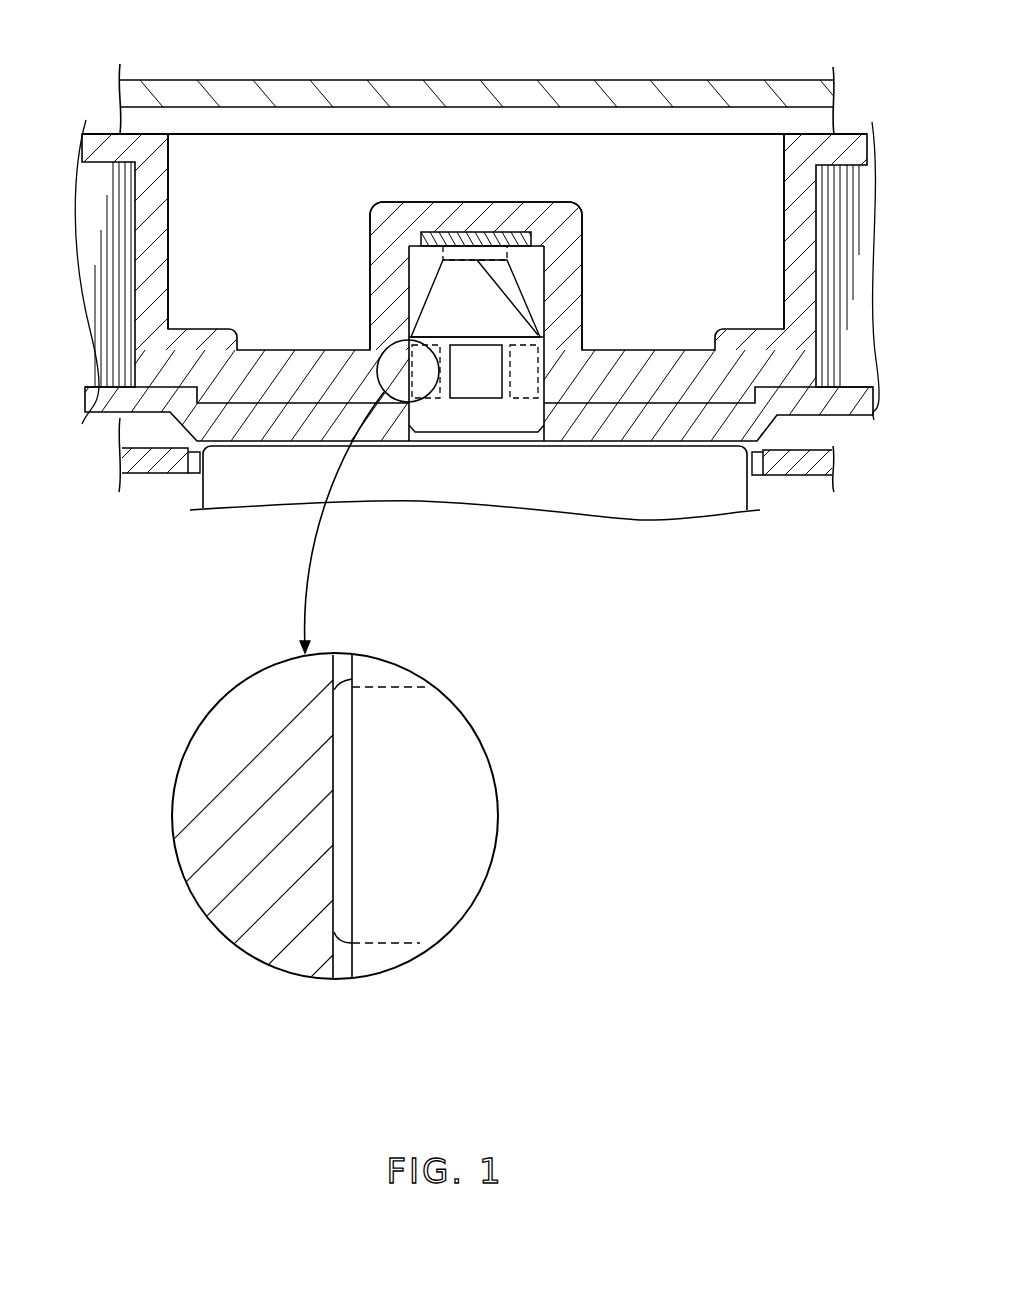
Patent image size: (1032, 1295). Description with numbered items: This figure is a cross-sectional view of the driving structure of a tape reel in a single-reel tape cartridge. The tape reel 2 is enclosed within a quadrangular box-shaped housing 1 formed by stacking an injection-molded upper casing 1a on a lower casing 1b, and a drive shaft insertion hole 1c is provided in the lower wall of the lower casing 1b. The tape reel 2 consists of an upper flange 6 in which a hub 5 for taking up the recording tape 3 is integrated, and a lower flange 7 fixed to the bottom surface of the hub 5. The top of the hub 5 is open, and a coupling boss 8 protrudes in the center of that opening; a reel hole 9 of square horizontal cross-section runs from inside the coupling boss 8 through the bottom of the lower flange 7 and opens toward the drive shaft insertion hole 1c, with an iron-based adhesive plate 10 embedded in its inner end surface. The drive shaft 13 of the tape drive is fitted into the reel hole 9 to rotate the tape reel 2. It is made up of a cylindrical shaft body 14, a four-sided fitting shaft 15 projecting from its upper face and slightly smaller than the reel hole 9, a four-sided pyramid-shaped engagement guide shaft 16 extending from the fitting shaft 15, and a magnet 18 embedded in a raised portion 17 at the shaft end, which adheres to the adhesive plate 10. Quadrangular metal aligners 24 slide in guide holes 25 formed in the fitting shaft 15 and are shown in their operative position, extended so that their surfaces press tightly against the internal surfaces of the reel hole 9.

The housing 1 is at (295, 78).
The upper casing 1a is at (223, 90).
The lower casing 1b is at (135, 476).
The drive shaft insertion hole 1c is at (188, 477).
The tape reel 2 is at (716, 137).
The recording tape 3 is at (847, 184).
The hub 5 is at (800, 225).
The upper flange 6 is at (853, 133).
The lower flange 7 is at (838, 417).
The coupling boss 8 is at (222, 728).
The reel hole 9 is at (357, 672).
The adhesive plate 10 is at (437, 240).
The drive shaft 13 is at (600, 519).
The shaft body 14 is at (708, 512).
The fitting shaft 15 is at (517, 745).
The engagement guide shaft 16 is at (428, 287).
The raised portion 17 is at (528, 238).
The magnet 18 is at (492, 252).
The aligner 24 is at (423, 399).
The guide hole 25 is at (393, 943).